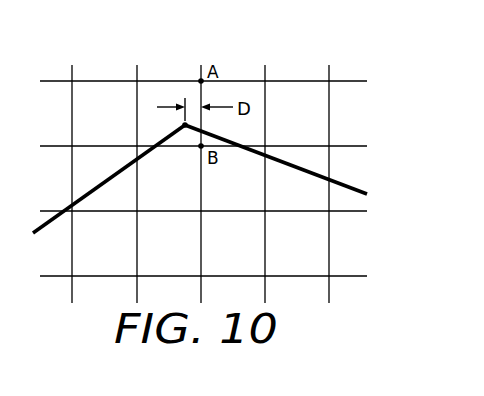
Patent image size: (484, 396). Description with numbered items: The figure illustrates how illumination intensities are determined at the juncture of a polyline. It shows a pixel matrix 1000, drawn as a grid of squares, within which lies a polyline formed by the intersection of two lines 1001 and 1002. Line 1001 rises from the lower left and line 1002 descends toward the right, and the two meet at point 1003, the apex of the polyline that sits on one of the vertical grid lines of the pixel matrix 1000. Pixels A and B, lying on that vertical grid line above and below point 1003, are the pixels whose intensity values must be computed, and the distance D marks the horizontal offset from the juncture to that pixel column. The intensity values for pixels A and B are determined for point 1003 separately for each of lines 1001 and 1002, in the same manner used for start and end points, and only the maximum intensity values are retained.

The pixel matrix 1000 is at (288, 59).
The line 1001 is at (82, 197).
The line 1002 is at (380, 173).
The point 1003 is at (184, 124).